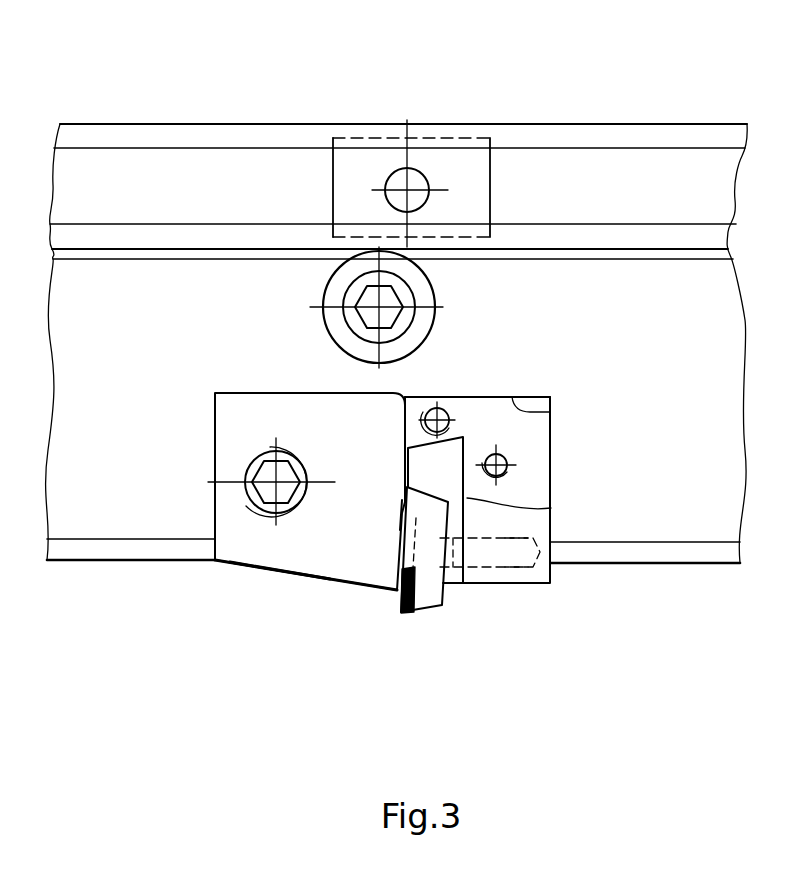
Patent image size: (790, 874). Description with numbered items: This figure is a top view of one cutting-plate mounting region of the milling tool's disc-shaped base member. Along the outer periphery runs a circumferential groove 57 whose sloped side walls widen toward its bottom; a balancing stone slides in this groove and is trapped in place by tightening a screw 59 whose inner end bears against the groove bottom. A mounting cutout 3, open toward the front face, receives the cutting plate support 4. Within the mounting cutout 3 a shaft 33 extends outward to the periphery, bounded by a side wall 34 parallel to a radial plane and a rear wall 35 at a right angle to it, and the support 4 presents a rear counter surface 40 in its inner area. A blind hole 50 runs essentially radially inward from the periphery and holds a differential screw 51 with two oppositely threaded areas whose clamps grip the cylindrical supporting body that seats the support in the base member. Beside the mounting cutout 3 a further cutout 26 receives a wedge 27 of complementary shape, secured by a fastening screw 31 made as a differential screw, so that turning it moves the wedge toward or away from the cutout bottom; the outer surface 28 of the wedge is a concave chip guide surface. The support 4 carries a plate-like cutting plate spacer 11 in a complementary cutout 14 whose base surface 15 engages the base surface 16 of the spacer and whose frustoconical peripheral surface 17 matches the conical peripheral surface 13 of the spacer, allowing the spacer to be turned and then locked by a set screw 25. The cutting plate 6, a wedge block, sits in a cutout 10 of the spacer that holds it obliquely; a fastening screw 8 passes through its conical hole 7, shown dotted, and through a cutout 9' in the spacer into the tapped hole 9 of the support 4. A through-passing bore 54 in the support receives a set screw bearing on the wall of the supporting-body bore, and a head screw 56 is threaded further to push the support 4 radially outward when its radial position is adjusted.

The groove 57 is at (657, 172).
The screw 59 is at (365, 172).
The differential screw 51 is at (407, 120).
The blind hole 50 is at (381, 303).
The wedge 27 is at (280, 418).
The cutout 26 is at (212, 443).
The fastening screw 31 is at (272, 480).
The chip guide surface 28 is at (277, 538).
The cutting plate support 4 is at (538, 568).
The rear counter surface 40 is at (553, 412).
The head screw 56 is at (438, 462).
The peripheral surface 13 is at (433, 406).
The set screw 25 is at (506, 458).
The through-passing bore 54 is at (465, 445).
The cutting plate spacer 11 is at (513, 397).
The complementary cutout 14 is at (520, 397).
The rear wall 35 is at (528, 397).
The shaft 33 is at (535, 397).
The mounting cutout 3 is at (543, 397).
The side wall 34 is at (551, 468).
The base surface 15 is at (551, 508).
The cutting plate 6 is at (423, 548).
The conical hole 7 is at (398, 548).
The peripheral surface 17 is at (400, 490).
The base surface 16 is at (394, 508).
The fastening screw 8 is at (505, 572).
The tapped hole 9 is at (522, 605).
The cutout 9' is at (417, 605).
The cutout 10 is at (487, 565).